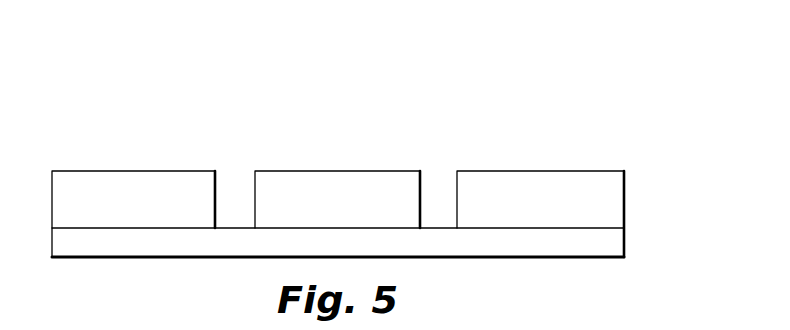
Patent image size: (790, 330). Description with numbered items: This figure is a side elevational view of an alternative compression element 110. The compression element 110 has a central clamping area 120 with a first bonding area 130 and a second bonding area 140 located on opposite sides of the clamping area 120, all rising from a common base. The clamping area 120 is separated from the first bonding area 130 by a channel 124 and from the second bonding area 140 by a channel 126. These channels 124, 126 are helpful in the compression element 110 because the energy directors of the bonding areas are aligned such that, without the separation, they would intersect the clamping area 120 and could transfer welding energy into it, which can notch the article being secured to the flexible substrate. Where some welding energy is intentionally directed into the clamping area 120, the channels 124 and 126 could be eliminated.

The compression element 110 is at (597, 108).
The clamping area 120 is at (255, 160).
The channel 124 is at (231, 180).
The channel 126 is at (436, 182).
The first bonding area 130 is at (215, 160).
The second bonding area 140 is at (460, 160).